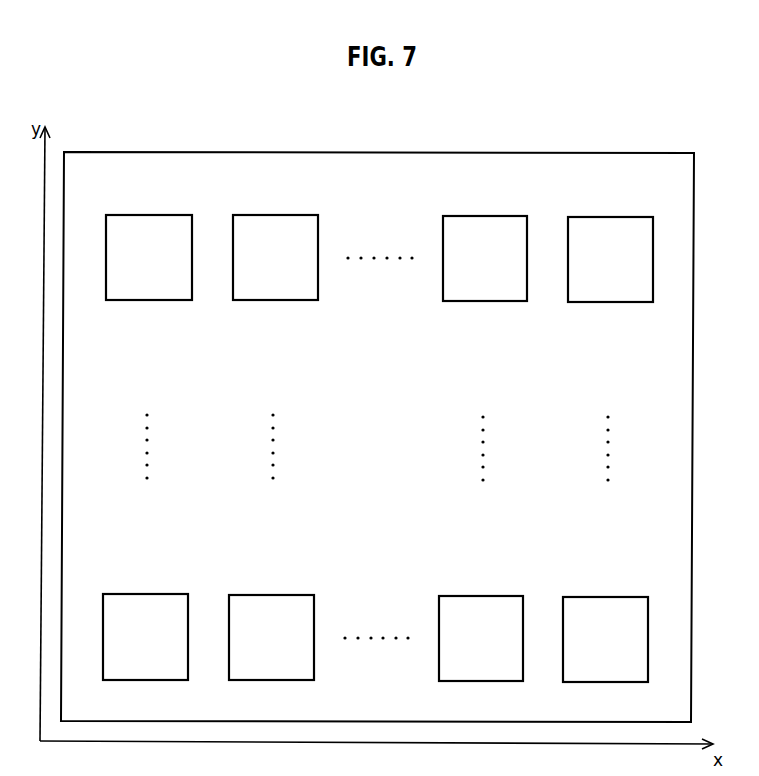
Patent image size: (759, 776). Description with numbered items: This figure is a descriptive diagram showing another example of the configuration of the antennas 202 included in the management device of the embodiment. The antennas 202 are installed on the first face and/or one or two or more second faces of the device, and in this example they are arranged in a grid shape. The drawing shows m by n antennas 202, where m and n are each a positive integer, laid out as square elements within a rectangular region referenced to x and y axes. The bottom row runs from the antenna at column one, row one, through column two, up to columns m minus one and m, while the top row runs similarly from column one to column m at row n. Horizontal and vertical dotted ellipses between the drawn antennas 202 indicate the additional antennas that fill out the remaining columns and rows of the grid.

The antenna 202 is at (378, 429).